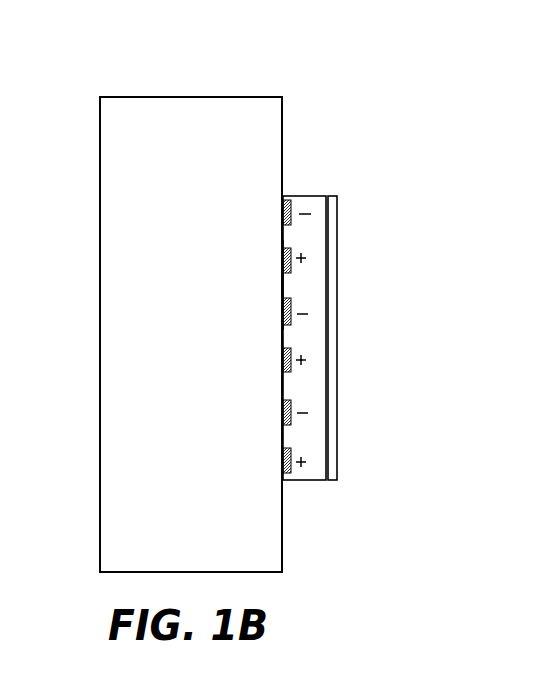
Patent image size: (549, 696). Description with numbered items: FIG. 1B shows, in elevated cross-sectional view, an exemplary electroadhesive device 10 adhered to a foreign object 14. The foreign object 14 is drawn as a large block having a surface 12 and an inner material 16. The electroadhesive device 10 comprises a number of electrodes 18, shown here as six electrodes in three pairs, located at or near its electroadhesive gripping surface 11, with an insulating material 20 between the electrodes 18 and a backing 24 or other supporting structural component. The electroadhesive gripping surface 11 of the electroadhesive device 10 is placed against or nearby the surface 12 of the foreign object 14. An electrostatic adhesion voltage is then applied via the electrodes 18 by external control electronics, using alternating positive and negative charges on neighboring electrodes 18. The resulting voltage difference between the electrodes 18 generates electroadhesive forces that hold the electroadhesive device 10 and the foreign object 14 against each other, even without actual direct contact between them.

The electroadhesive device 10 is at (370, 307).
The electroadhesive gripping surface 11 is at (283, 282).
The surface 12 is at (279, 297).
The foreign object 14 is at (223, 122).
The inner material 16 is at (185, 352).
The electrodes 18 is at (292, 413).
The insulating material 20 is at (320, 391).
The backing 24 is at (333, 390).